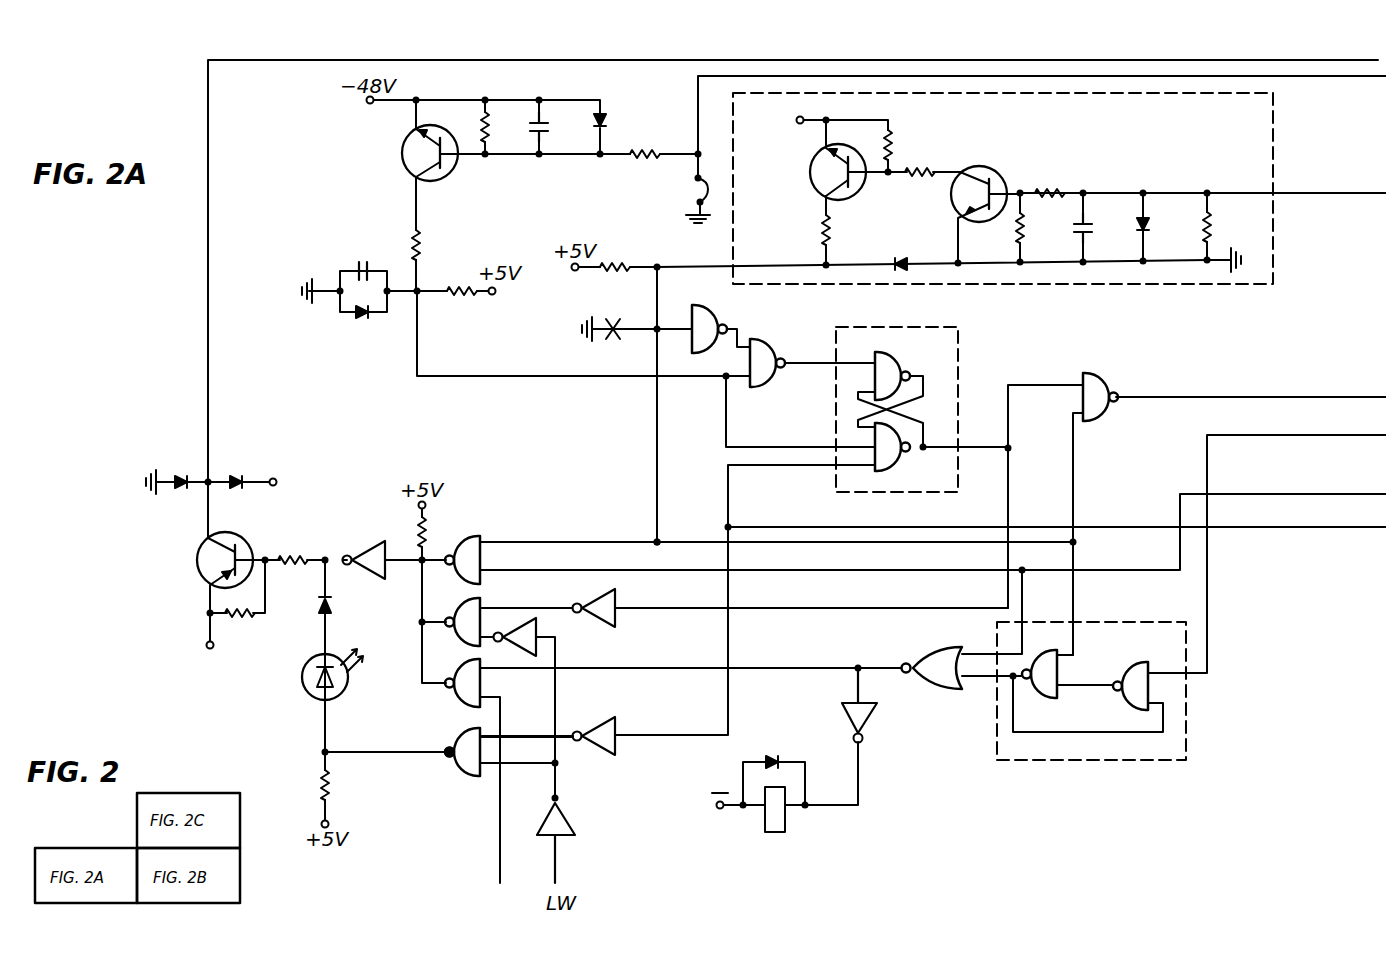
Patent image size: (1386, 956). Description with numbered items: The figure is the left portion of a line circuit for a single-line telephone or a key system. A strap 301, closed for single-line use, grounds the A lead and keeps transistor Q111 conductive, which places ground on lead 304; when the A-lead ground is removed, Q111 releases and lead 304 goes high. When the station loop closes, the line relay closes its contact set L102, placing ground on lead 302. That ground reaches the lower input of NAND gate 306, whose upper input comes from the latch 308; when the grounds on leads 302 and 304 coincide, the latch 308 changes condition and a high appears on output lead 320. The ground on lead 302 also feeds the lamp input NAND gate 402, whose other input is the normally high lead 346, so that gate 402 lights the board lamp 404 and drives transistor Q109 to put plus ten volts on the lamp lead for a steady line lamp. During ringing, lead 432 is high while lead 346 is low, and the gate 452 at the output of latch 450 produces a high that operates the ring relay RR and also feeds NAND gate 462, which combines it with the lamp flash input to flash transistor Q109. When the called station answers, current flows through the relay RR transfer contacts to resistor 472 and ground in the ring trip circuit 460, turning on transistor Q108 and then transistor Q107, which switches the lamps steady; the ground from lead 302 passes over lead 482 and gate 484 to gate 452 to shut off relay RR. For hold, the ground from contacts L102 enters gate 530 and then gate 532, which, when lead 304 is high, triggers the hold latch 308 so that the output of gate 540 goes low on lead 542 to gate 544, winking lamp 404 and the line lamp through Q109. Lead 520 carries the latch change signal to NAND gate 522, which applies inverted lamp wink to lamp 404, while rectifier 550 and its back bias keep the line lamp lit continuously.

The strap 301 is at (693, 189).
The lead 302 is at (657, 446).
The lead 304 is at (533, 374).
The NAND gate 306 is at (1098, 376).
The latch 308 is at (958, 345).
The output lead 320 is at (1361, 395).
The lead 346 is at (1361, 494).
The NAND gate 402 is at (482, 534).
The lamp 404 is at (302, 690).
The lead 432 is at (1361, 435).
The latch 450 is at (1094, 760).
The gate 452 is at (946, 648).
The ring trip circuit 460 is at (1059, 188).
The NAND gate 462 is at (461, 701).
The resistor 472 is at (1221, 219).
The lead 482 is at (1077, 602).
The gate 484 is at (1050, 697).
The lead 520 is at (1361, 524).
The NAND gate 522 is at (462, 778).
The gate 530 is at (723, 308).
The gate 532 is at (795, 320).
The gate 540 is at (897, 468).
The lead 542 is at (840, 608).
The gate 544 is at (492, 584).
The rectifier 550 is at (330, 603).
The transistor Q107 is at (810, 173).
The transistor Q108 is at (1007, 159).
The transistor Q109 is at (195, 565).
The transistor Q111 is at (402, 153).
The contact set L102 is at (620, 318).
The ring relay RR is at (783, 832).